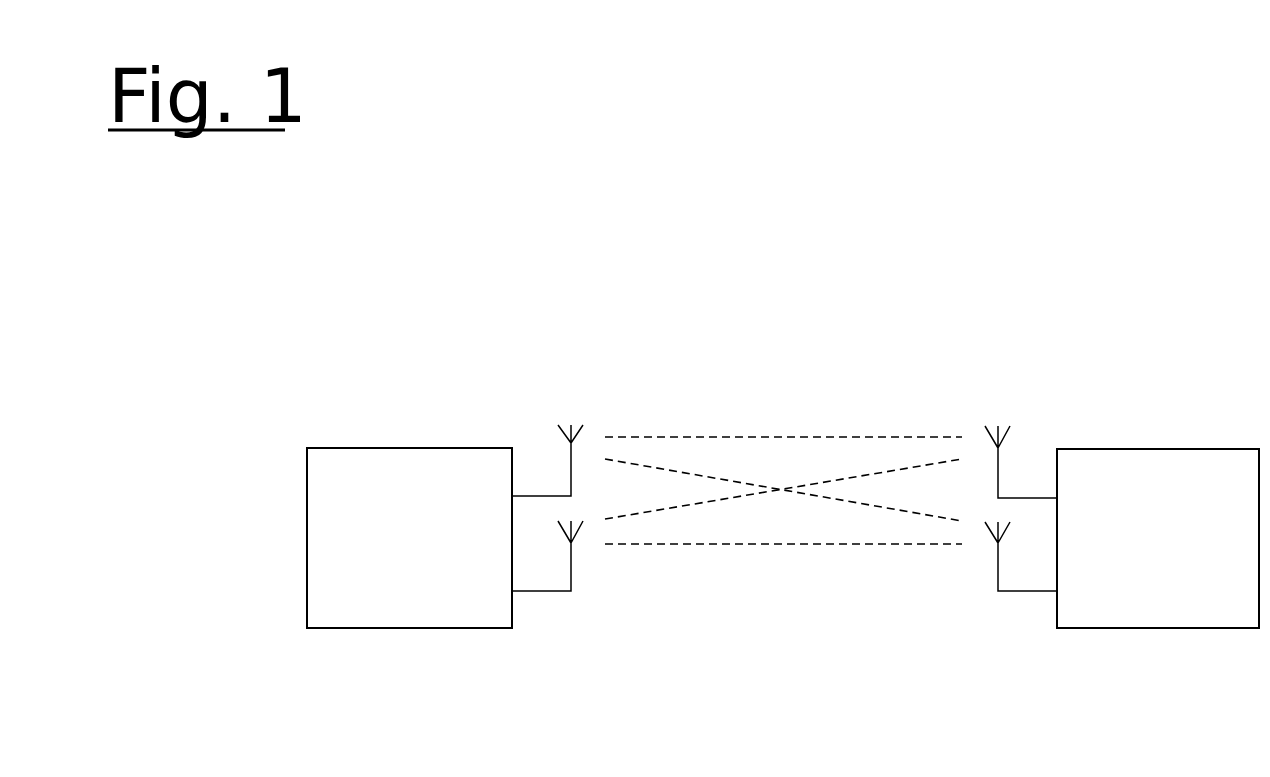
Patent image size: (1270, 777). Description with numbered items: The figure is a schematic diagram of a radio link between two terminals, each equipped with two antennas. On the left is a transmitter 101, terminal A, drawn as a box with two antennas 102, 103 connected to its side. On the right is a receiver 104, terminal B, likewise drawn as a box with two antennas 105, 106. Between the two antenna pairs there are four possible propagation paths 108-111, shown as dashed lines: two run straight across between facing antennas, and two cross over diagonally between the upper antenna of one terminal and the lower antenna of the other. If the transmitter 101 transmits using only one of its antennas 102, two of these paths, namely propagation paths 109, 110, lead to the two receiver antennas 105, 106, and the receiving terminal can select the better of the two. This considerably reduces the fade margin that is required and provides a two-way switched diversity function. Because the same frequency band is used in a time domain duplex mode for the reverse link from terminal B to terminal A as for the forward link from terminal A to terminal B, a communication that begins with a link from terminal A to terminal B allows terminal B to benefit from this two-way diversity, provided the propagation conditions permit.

The transmitter 101 is at (409, 558).
The antenna 102 is at (557, 401).
The antenna 103 is at (573, 602).
The receiver 104 is at (1158, 559).
The antenna 105 is at (997, 415).
The antenna 106 is at (987, 568).
The propagation path 108 is at (679, 555).
The propagation path 109 is at (700, 425).
The propagation path 110 is at (892, 520).
The propagation path 111 is at (892, 460).